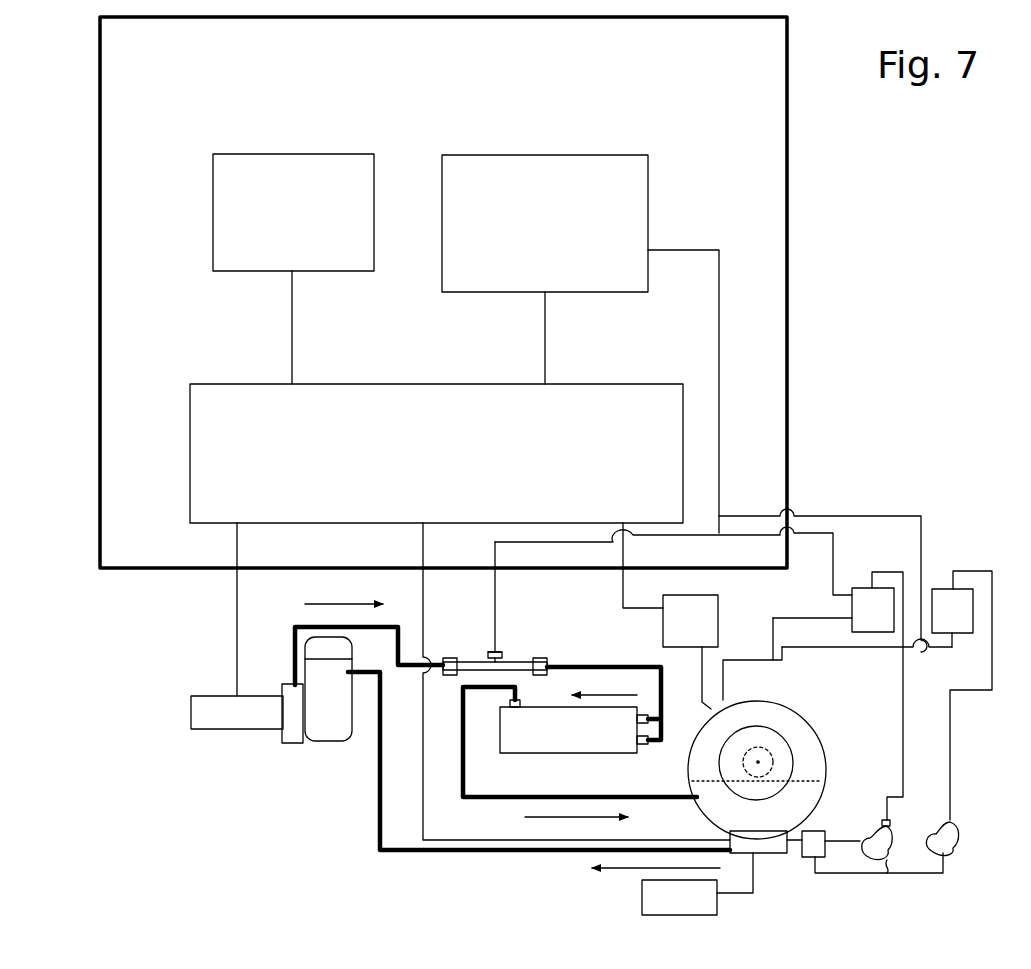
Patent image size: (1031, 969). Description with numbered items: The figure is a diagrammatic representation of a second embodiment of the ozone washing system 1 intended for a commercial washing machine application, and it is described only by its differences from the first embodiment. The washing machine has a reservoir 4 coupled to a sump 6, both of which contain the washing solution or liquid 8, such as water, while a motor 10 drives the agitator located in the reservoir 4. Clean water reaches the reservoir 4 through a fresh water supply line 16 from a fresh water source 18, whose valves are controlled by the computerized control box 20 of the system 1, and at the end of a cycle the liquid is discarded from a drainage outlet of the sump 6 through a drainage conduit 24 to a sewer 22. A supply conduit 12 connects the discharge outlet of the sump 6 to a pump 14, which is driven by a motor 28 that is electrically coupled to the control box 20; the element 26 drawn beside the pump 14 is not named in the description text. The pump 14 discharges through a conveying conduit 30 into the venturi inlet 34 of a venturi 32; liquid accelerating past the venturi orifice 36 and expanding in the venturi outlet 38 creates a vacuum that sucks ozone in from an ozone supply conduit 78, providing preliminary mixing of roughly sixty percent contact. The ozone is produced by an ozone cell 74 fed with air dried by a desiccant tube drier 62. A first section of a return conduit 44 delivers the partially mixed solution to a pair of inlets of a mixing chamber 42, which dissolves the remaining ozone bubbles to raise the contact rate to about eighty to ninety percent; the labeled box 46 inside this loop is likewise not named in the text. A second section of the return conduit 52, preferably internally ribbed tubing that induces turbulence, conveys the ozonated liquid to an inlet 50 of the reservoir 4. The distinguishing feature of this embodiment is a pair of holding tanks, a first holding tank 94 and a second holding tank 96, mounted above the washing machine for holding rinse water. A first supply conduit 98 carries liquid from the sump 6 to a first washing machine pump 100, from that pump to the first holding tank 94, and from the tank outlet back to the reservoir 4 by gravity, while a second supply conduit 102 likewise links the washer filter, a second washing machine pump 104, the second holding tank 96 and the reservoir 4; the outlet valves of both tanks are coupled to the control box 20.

The system 1 is at (866, 262).
The reservoir 4 is at (815, 805).
The sump 6 is at (768, 853).
The washing solution or liquid 8 is at (802, 786).
The motor 10 is at (763, 750).
The supply conduit 12 is at (380, 827).
The pump 14 is at (293, 743).
The fresh water supply line 16 is at (703, 668).
The fresh water source 18 is at (718, 607).
The computerized control box 20 is at (450, 398).
The sewer 22 is at (642, 900).
The drainage conduit 24 is at (723, 893).
The air reservoir 26 is at (340, 741).
The motor 28 is at (208, 730).
The conveying conduit 30 is at (296, 633).
The venturi 32 is at (480, 657).
The venturi inlet 34 is at (450, 657).
The venturi orifice 36 is at (497, 666).
The venturi outlet 38 is at (542, 658).
The mixing chamber 42 is at (560, 753).
The return conduit first section 44 is at (630, 667).
The mixing chamber 46 is at (574, 726).
The inlet of the reservoir 50 is at (698, 787).
The return conduit second section 52 is at (500, 800).
The desiccant tube drier 62 is at (213, 215).
The ozone cell 74 is at (593, 155).
The ozone supply conduit 78 is at (497, 592).
The first holding tank 94 is at (877, 696).
The second holding tank 96 is at (962, 695).
The first supply conduit 98 is at (795, 618).
The first washing machine pump 100 is at (882, 869).
The second supply conduit 102 is at (927, 652).
The second washing machine pump 104 is at (936, 822).